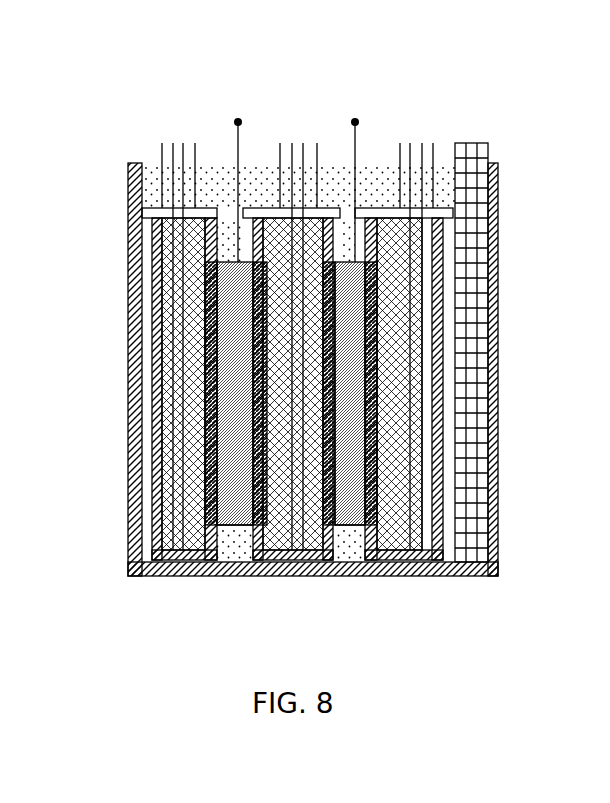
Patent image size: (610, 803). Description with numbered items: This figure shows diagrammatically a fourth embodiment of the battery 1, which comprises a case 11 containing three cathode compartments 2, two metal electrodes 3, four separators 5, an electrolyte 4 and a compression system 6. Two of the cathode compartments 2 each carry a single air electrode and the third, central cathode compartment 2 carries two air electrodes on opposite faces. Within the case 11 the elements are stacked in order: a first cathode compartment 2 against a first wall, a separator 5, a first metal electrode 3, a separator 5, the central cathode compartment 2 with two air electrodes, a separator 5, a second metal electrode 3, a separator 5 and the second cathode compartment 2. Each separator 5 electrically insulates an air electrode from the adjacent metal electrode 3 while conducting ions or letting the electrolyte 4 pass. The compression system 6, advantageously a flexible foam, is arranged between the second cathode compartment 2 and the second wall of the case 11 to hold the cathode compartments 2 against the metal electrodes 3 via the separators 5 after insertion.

The battery 1 is at (85, 123).
The cathode compartment 2 is at (132, 270).
The metal electrode 3 is at (425, 388).
The electrolyte 4 is at (338, 190).
The separator 5 is at (205, 455).
The compression system 6 is at (490, 150).
The case 11 is at (130, 323).